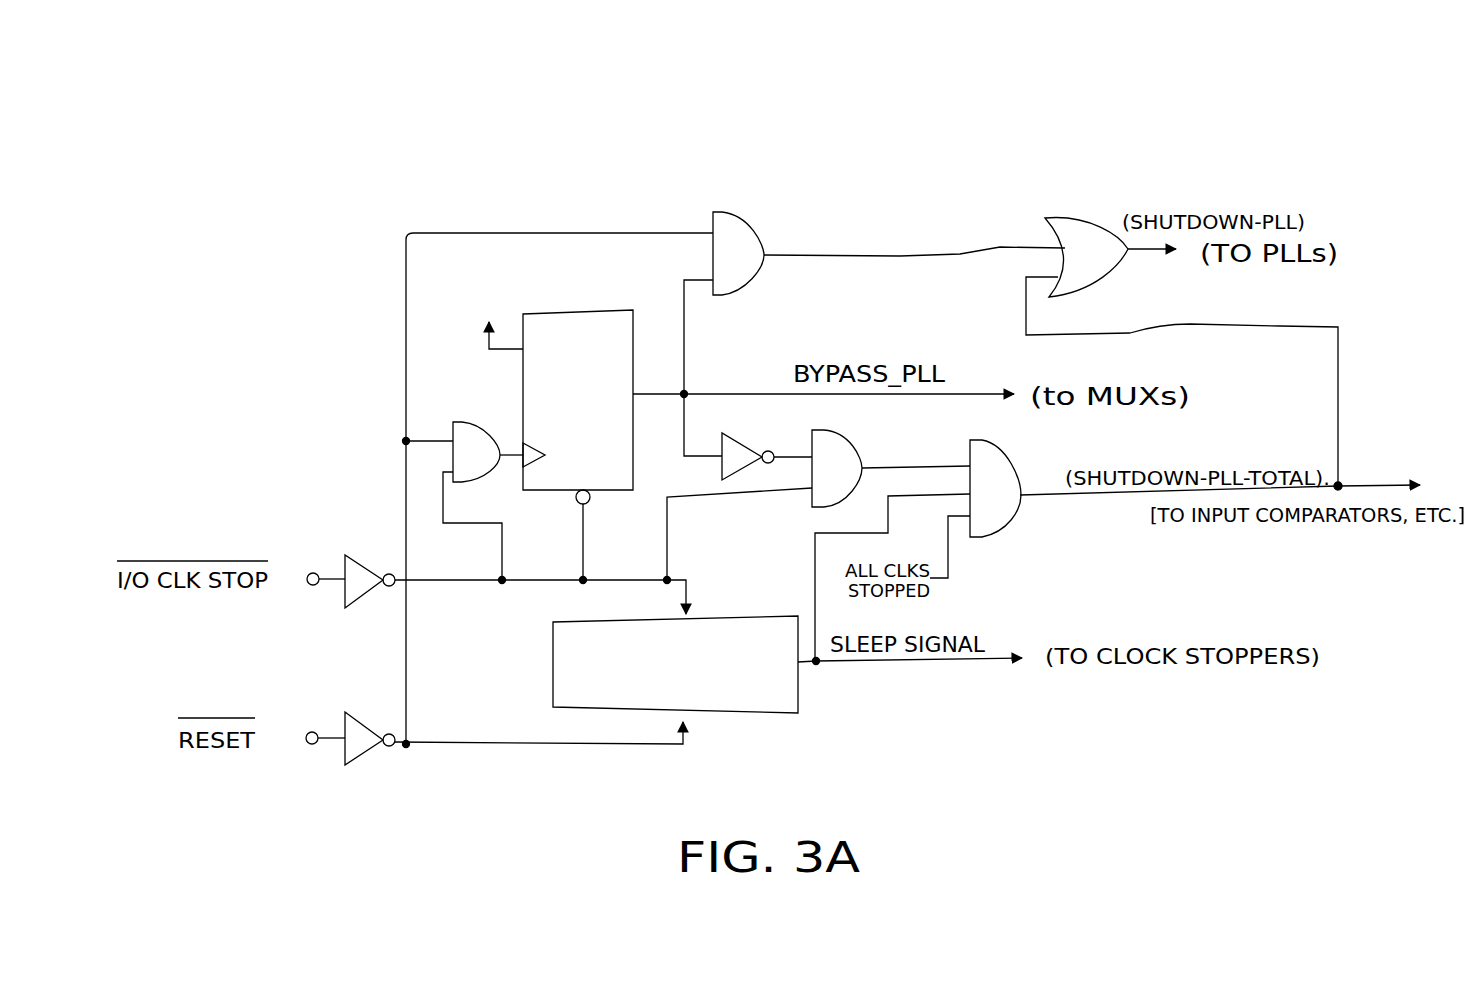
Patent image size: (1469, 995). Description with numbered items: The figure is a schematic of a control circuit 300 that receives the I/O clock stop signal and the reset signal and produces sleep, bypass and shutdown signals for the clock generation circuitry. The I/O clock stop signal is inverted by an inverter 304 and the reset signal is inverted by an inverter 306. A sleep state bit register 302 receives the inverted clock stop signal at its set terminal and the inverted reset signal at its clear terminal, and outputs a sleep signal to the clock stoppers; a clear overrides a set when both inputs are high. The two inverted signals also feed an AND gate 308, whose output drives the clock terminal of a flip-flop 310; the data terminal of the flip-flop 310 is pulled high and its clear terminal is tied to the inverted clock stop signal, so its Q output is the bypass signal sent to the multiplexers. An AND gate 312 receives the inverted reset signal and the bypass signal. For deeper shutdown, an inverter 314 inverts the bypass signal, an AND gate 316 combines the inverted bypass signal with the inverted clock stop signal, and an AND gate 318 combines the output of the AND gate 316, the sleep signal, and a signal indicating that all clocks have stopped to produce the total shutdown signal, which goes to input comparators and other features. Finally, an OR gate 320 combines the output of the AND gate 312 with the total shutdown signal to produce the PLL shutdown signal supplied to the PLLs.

The control circuit 300 is at (919, 160).
The sleep state bit register 302 is at (553, 655).
The inverter 304 is at (362, 558).
The inverter 306 is at (365, 718).
The AND gate 308 is at (470, 420).
The flip-flop 310 is at (578, 312).
The AND gate 312 is at (740, 215).
The inverter 314 is at (740, 440).
The AND gate 316 is at (858, 448).
The AND gate 318 is at (1018, 468).
The OR gate 320 is at (1085, 222).